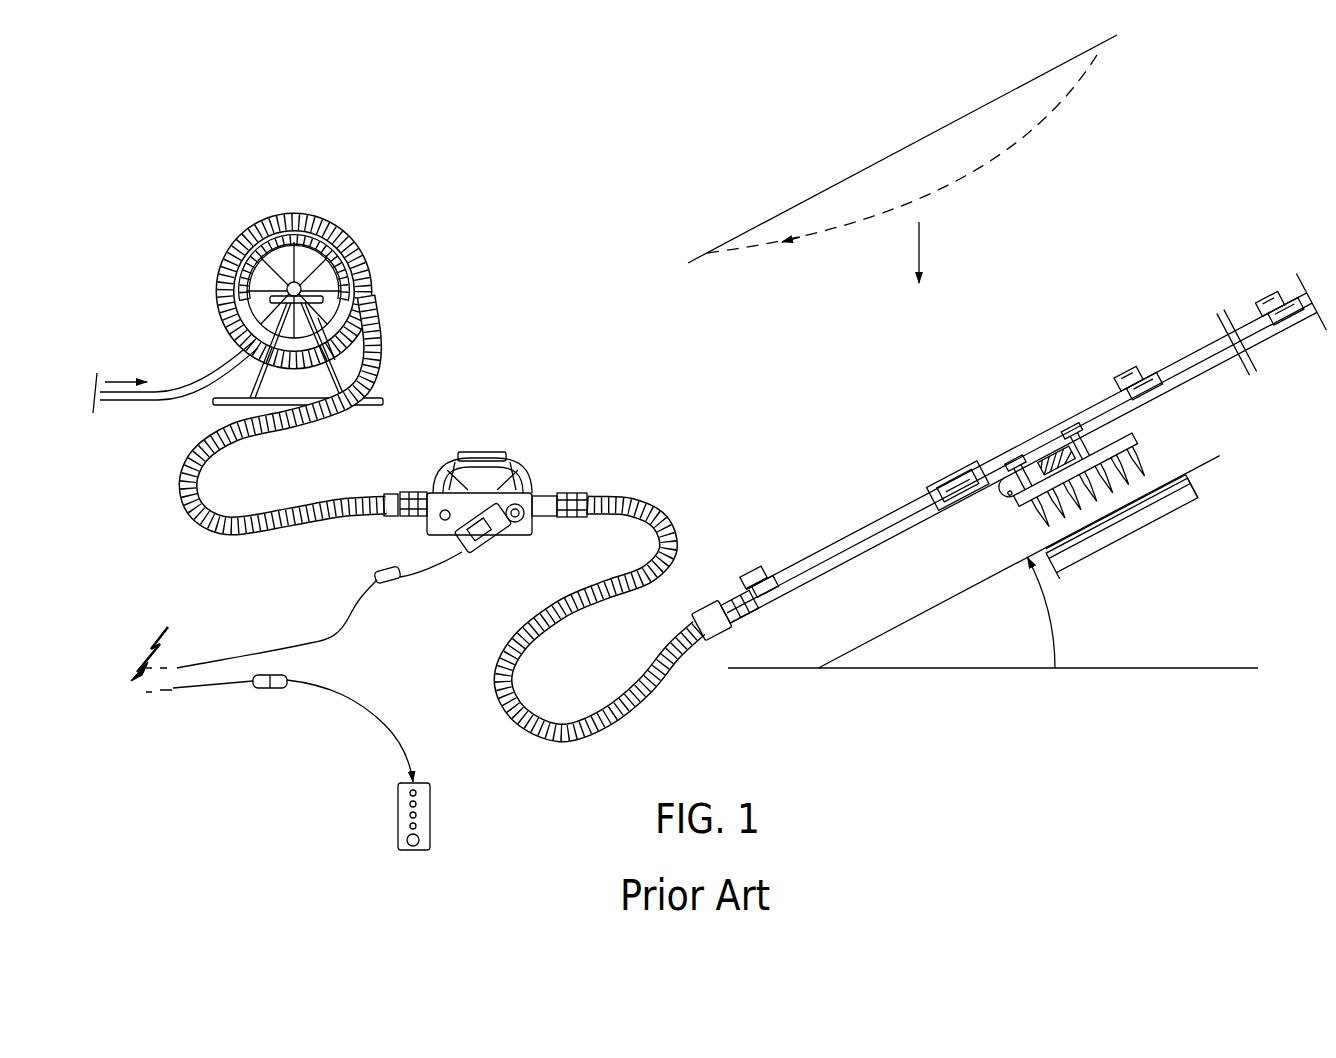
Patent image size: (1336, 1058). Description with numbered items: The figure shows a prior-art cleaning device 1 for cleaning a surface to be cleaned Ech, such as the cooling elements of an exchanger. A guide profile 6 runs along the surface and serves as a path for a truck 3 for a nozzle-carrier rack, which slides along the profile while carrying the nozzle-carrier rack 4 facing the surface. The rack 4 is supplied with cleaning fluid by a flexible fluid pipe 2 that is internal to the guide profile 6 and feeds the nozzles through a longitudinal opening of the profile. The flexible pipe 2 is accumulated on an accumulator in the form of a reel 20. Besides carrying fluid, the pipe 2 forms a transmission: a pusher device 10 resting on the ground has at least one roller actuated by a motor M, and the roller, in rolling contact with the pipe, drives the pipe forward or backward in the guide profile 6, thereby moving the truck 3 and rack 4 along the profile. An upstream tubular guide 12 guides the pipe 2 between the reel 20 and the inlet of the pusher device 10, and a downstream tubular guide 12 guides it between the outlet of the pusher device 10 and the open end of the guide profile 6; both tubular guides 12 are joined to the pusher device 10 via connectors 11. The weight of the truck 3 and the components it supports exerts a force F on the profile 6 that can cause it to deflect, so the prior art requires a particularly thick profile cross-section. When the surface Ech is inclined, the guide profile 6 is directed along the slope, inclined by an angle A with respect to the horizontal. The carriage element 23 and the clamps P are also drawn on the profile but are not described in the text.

The device for cleaning surfaces 1 is at (830, 417).
The fluid pipe 2 is at (367, 262).
The truck for a nozzle-carrier rack 3 is at (1013, 512).
The nozzle-carrier rack 4 is at (1122, 446).
The guide profile 6 is at (887, 547).
The pusher device 10 is at (484, 421).
The connectors 11 is at (413, 479).
The tubular guide 12 is at (262, 527).
The reel 20 is at (207, 276).
The carriage 23 is at (1018, 456).
The motor M is at (480, 555).
The force F is at (902, 159).
The clamps P is at (1262, 296).
The angle A is at (1054, 613).
The surface to be cleaned Ech is at (1132, 523).